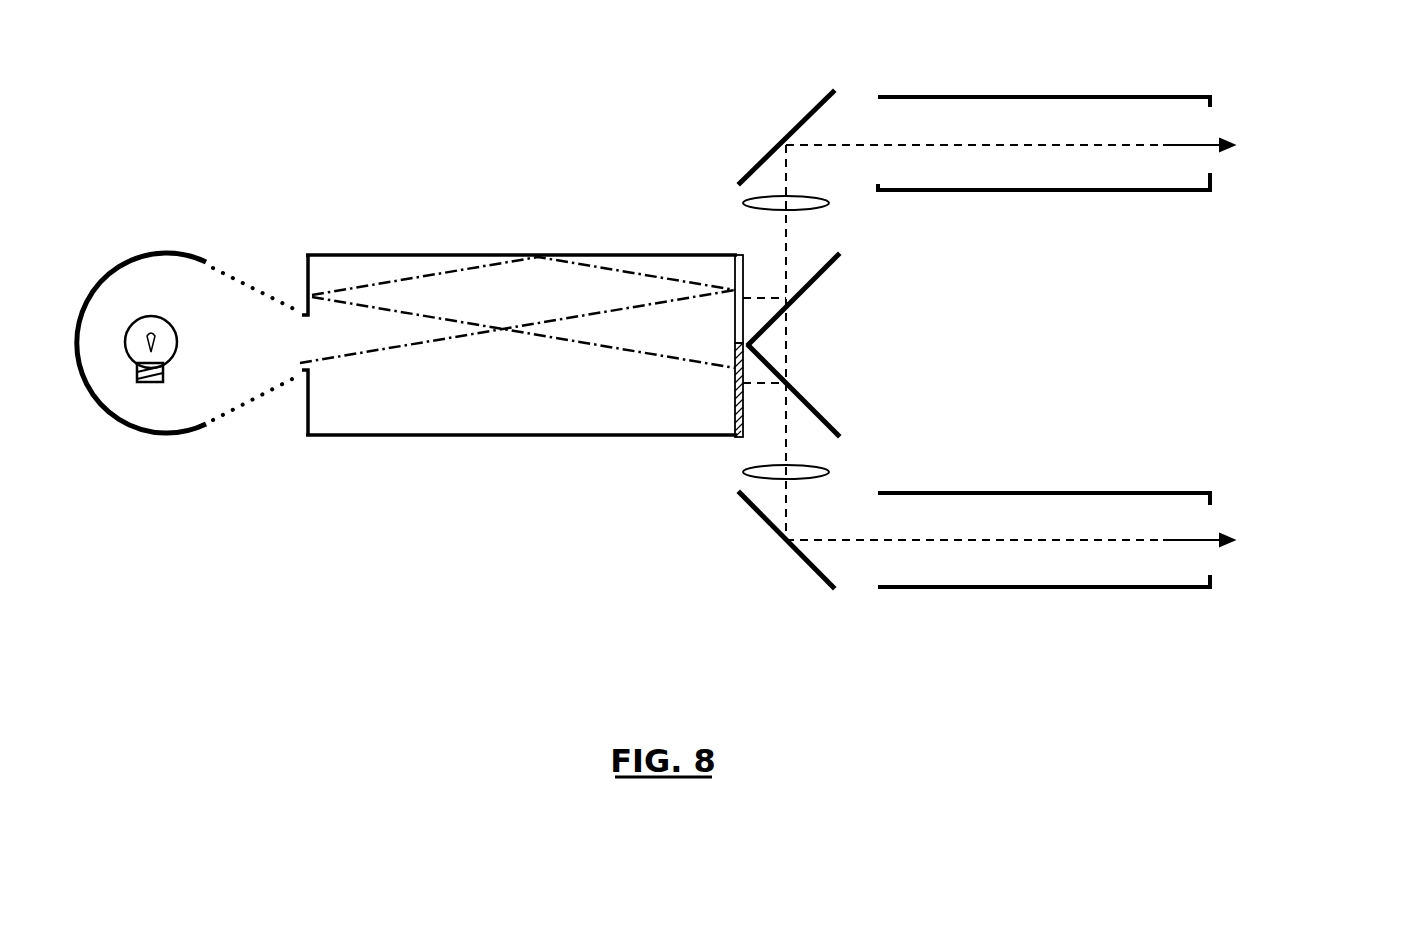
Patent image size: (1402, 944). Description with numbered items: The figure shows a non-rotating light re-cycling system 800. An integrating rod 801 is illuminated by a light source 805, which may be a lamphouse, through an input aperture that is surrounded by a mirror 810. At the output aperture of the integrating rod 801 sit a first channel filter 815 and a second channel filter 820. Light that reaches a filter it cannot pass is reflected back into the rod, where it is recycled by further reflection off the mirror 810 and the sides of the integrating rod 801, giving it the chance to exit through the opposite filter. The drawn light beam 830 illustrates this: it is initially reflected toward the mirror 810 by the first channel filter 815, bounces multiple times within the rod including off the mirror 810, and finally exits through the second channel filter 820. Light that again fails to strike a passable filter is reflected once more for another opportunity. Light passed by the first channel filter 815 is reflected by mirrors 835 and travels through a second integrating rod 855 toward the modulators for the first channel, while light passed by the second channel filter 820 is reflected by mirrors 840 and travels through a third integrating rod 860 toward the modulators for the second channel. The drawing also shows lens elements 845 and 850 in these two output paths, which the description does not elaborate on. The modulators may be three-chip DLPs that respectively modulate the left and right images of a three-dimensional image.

The non-rotating light re-cycling system 800 is at (312, 559).
The integrating rod 801 is at (422, 255).
The light source 805 is at (187, 260).
The mirror 810 is at (308, 278).
The first channel filter 815 is at (738, 255).
The second channel filter 820 is at (738, 437).
The light beam 830 is at (607, 347).
The mirrors 835 is at (757, 167).
The mirrors 840 is at (813, 407).
The first channel lens 845 is at (793, 236).
The second channel lens 850 is at (793, 449).
The second integrating rod 855 is at (1152, 97).
The third integrating rod 860 is at (1152, 587).